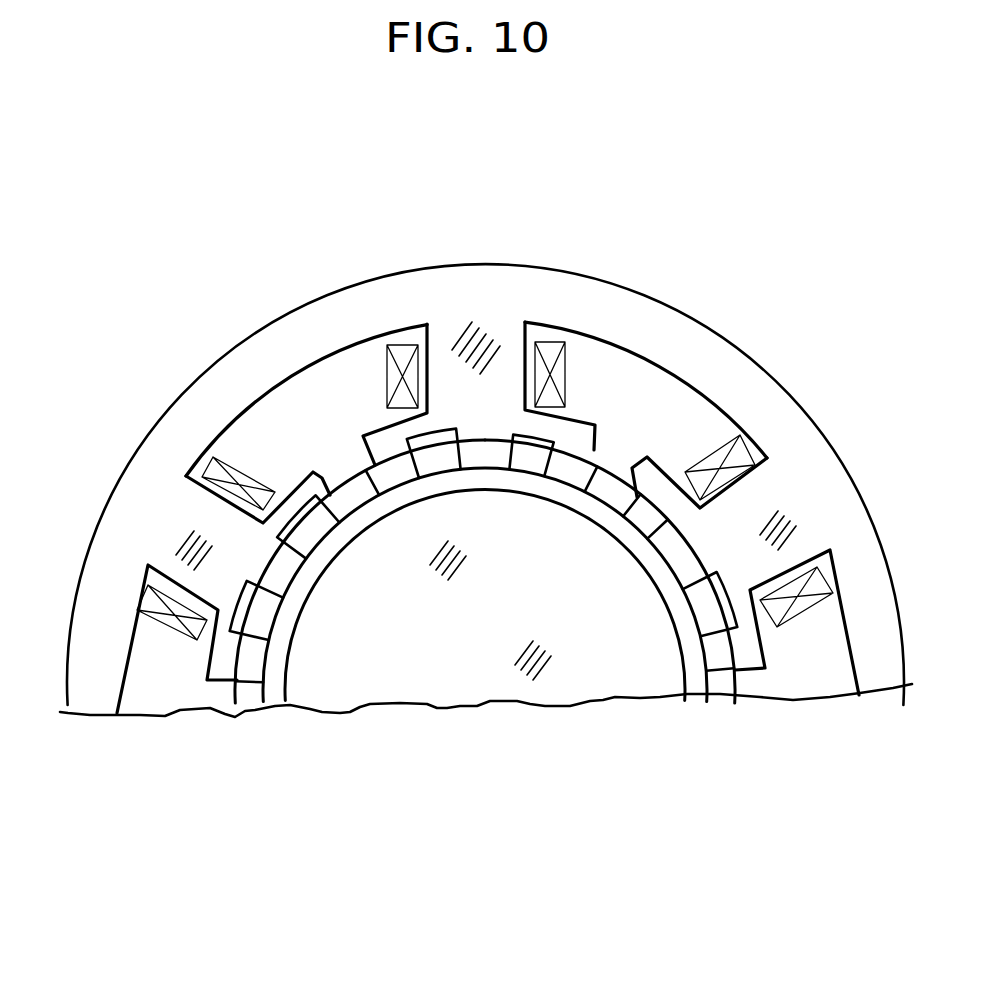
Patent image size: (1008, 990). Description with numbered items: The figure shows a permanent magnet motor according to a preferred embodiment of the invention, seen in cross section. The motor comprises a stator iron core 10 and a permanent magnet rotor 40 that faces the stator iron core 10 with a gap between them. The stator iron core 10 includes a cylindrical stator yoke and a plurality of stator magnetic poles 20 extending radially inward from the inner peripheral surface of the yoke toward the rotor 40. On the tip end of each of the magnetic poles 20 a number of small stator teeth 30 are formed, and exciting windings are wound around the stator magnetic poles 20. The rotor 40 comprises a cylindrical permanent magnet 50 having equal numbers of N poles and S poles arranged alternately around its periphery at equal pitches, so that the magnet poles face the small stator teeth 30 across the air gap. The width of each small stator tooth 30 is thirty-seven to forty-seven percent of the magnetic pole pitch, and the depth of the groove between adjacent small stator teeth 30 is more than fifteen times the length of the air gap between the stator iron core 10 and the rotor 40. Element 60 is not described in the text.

The stator iron core 10 is at (177, 432).
The stator magnetic poles 20 is at (770, 490).
The small stator teeth 30 is at (330, 478).
The permanent magnet rotor 40 is at (263, 705).
The cylindrical permanent magnet 50 is at (700, 640).
The rotor yoke 60 is at (288, 626).